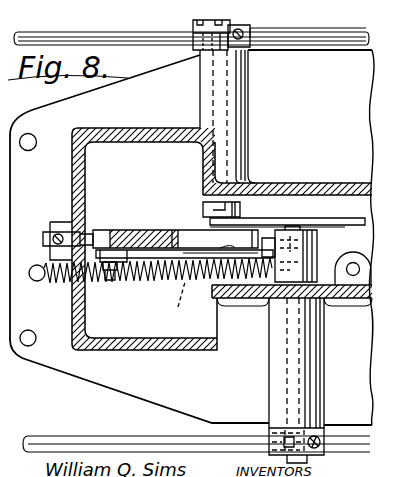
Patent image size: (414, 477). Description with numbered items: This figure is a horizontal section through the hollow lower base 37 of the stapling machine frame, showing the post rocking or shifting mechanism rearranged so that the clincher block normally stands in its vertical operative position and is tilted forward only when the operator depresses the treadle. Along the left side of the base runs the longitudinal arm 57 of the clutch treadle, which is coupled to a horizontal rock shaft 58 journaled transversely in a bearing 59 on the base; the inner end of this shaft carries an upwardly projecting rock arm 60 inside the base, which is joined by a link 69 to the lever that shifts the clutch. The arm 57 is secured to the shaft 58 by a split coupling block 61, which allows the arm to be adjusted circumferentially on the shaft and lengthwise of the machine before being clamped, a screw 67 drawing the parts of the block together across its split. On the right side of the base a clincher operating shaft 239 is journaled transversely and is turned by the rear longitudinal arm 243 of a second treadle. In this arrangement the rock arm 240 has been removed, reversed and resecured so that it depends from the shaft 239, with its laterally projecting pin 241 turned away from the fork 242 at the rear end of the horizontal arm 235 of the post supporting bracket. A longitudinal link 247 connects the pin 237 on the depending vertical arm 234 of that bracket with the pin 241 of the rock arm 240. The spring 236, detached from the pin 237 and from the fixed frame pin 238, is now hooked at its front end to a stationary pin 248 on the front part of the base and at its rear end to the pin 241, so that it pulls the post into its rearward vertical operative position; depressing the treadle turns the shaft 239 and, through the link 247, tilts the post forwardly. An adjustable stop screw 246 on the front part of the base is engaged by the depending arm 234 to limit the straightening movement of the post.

The lower base 37 is at (211, 423).
The longitudinal arm 57 is at (345, 38).
The horizontal shaft 58 is at (210, 21).
The bearing 59 is at (199, 97).
The rock arm 60 is at (205, 210).
The coupling block 61 is at (246, 48).
The screw 67 is at (323, 444).
The link 69 is at (347, 214).
The vertical arm 234 is at (106, 228).
The horizontal arm 235 is at (176, 231).
The spring 236 is at (155, 30).
The pin 237 is at (114, 281).
The pin 238 is at (343, 1).
The clincher operating shaft 239 is at (295, 230).
The rock arm 240 is at (268, 238).
The pin 241 is at (278, 31).
The recess 242 is at (174, 306).
The rear longitudinal arm 243 is at (86, 437).
The adjustable stop screw 246 is at (72, 218).
The longitudinal link 247 is at (213, 247).
The stationary pin 248 is at (25, 3).